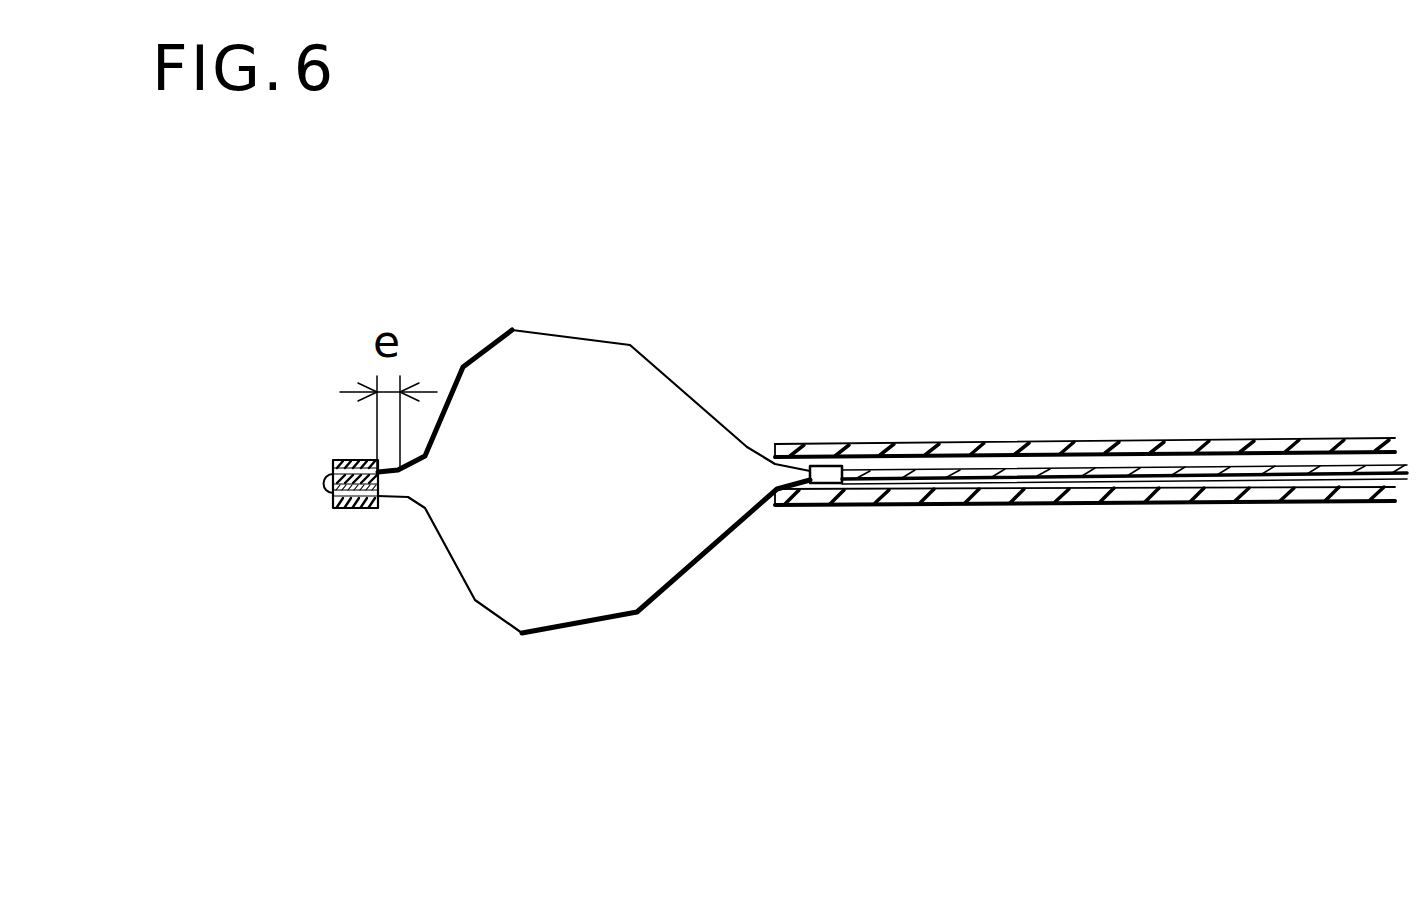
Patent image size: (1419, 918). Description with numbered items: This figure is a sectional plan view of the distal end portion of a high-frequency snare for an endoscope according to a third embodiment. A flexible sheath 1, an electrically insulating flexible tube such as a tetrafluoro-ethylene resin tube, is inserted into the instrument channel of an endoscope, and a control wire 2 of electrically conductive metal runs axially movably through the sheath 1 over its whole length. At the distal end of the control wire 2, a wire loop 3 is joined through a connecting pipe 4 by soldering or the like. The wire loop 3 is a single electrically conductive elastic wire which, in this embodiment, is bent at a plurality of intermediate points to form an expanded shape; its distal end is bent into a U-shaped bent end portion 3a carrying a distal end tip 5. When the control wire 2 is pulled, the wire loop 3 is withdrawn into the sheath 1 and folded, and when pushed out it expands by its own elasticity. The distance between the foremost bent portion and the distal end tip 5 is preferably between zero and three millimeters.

The flexible sheath 1 is at (1180, 440).
The control wire 2 is at (1308, 472).
The wire loop 3 is at (603, 338).
The U-shaped bent end portion 3a is at (322, 495).
The connecting pipe 4 is at (823, 477).
The distal end tip 5 is at (352, 510).